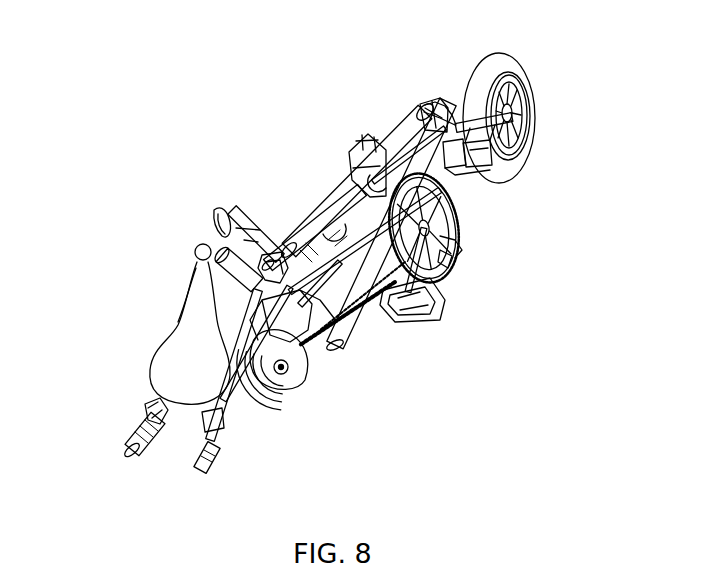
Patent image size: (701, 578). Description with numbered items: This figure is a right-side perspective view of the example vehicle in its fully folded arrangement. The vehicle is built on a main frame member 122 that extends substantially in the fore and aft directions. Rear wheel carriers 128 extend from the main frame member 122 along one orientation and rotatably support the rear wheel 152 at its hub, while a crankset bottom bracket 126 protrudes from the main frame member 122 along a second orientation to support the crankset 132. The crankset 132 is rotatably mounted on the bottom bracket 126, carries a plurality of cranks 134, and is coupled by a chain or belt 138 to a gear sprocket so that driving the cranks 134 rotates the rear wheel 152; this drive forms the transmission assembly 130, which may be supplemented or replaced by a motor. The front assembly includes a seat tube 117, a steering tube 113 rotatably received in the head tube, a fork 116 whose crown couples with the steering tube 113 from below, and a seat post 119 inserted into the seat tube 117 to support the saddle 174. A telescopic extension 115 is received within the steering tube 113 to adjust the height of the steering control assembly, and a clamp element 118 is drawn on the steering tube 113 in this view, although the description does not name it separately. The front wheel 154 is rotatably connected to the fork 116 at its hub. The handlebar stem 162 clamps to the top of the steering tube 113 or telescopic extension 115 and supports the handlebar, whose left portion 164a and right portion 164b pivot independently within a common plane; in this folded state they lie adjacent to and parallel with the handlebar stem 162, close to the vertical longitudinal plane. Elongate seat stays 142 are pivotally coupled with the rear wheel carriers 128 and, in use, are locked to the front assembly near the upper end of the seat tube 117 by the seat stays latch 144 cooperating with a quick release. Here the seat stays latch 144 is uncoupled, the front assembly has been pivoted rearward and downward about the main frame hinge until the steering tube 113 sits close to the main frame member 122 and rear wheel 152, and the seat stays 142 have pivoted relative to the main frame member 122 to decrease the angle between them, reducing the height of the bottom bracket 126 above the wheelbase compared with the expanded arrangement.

The steering tube 113 is at (352, 215).
The telescopic extension 115 is at (301, 250).
The fork 116 is at (512, 137).
The seat tube 117 is at (405, 138).
The clamp 118 is at (356, 157).
The seat post 119 is at (270, 245).
The main frame member 122 is at (376, 265).
The crankset bottom bracket 126 is at (457, 240).
The rear wheel carrier 128 is at (337, 327).
The transmission assembly 130 is at (451, 382).
The crankset 132 is at (454, 257).
The crank 134 is at (450, 288).
The chain or belt 138 is at (372, 320).
The seat stay 142 is at (373, 280).
The seat stays latch 144 is at (422, 103).
The rear wheel 152 is at (250, 417).
The front wheel 154 is at (520, 157).
The handlebar stem 162 is at (147, 403).
The left portion 164a is at (135, 442).
The right portion 164b is at (207, 470).
The saddle 174 is at (148, 367).